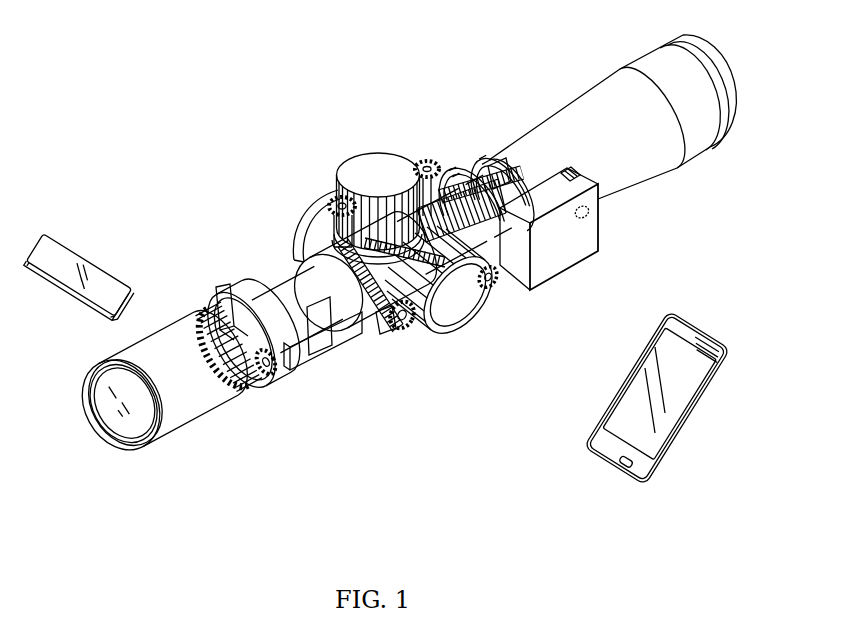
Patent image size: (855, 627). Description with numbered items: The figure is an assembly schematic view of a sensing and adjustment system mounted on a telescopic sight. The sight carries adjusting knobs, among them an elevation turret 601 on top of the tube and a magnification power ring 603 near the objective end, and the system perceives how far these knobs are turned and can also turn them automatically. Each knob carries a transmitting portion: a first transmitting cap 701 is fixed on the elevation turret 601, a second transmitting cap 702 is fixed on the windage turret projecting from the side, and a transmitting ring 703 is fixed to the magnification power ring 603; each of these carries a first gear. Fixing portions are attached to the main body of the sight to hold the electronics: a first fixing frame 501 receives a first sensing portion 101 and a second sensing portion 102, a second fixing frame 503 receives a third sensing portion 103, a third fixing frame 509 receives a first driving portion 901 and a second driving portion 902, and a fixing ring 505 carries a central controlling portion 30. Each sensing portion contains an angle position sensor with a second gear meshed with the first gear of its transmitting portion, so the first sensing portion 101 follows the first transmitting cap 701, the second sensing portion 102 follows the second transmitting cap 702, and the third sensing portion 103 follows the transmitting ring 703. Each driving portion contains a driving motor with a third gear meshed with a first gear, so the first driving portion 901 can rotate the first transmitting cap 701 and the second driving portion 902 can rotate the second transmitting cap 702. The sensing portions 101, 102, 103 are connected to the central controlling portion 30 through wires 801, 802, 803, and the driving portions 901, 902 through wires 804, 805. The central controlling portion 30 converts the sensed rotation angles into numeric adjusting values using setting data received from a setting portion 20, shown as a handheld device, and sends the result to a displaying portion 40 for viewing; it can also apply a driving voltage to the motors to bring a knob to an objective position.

The setting portion 20 is at (605, 430).
The central controlling portion 30 is at (567, 262).
The displaying portion 40 is at (82, 292).
The first sensing portion 101 is at (332, 195).
The second sensing portion 102 is at (404, 325).
The third sensing portion 103 is at (265, 380).
The first fixing frame 501 is at (362, 323).
The second fixing frame 503 is at (303, 370).
The fixing ring 505 is at (481, 165).
The third fixing frame 509 is at (453, 173).
The elevation turret 601 is at (282, 225).
The magnification power ring 603 is at (186, 322).
The first transmitting cap 701 is at (378, 165).
The second transmitting cap 702 is at (488, 322).
The transmitting ring 703 is at (226, 288).
The wire 801 is at (297, 262).
The wire 802 is at (383, 320).
The wire 803 is at (312, 345).
The wire 804 is at (497, 172).
The wire 805 is at (456, 222).
The first driving portion 901 is at (427, 157).
The second driving portion 902 is at (493, 300).